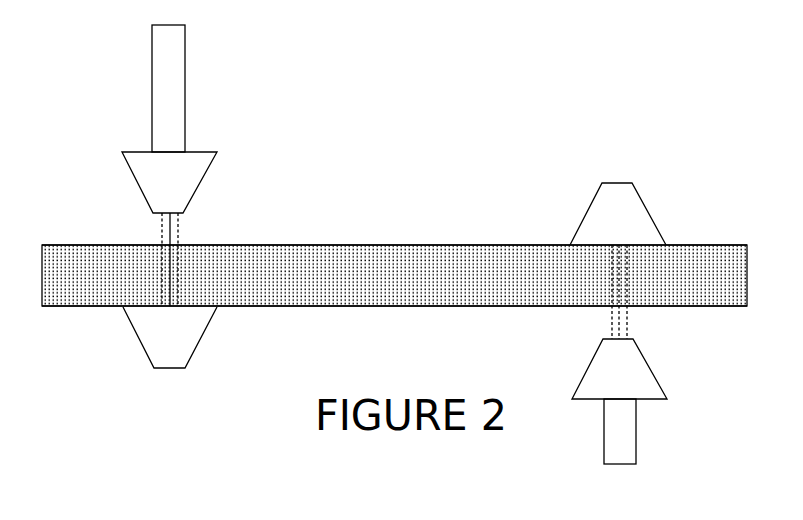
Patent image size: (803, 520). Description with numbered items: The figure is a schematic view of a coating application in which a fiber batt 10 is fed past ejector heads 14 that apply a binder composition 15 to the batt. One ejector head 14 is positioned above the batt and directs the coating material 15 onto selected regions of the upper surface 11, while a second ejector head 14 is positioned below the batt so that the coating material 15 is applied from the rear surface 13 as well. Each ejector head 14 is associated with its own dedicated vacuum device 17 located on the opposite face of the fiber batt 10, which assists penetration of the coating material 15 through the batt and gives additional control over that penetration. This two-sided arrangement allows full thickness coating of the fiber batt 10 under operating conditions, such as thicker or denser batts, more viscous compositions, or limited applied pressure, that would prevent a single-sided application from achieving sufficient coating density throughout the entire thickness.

The fiber batt 10 is at (88, 275).
The upper surface 11 is at (488, 243).
The rear surface 13 is at (394, 310).
The ejector head 14 is at (209, 178).
The binder composition 15 is at (182, 230).
The dedicated vacuum device 17 is at (204, 342).